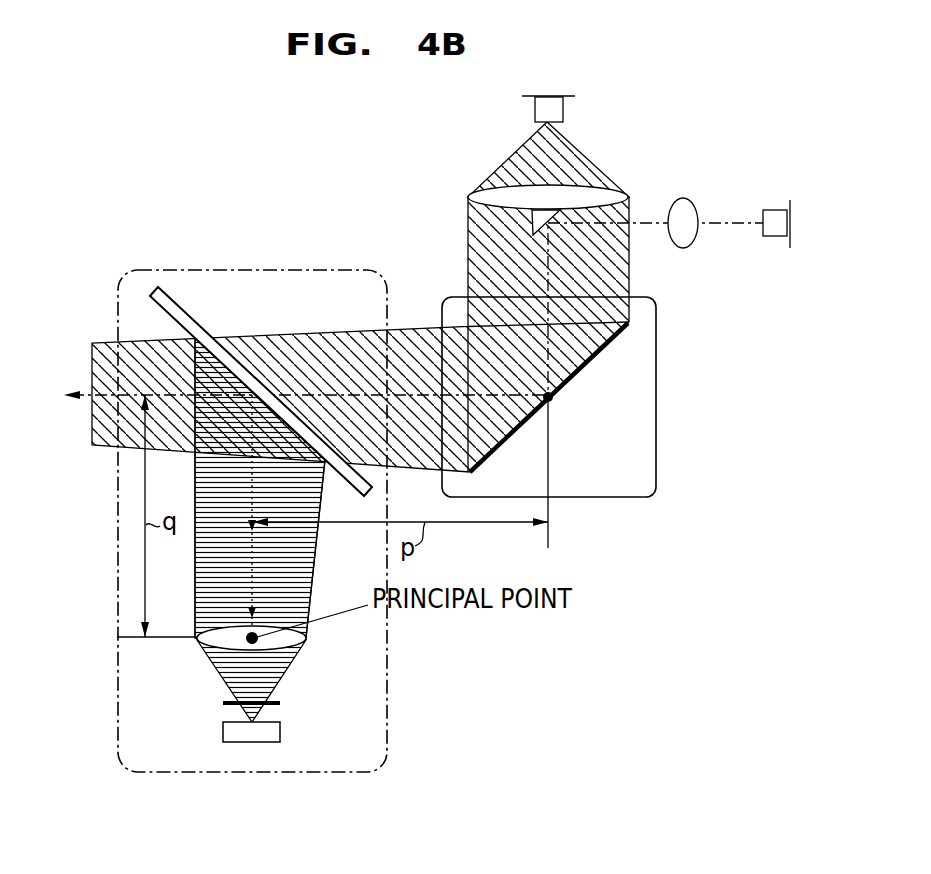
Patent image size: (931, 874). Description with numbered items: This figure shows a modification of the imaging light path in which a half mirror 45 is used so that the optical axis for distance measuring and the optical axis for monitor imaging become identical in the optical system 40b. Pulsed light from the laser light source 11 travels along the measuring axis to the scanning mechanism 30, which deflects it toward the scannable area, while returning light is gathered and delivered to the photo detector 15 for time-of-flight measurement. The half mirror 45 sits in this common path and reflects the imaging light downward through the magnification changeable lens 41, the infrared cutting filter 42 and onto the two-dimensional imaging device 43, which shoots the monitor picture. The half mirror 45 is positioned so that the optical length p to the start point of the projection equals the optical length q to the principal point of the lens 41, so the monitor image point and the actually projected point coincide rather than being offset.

The photo detector 15 is at (564, 113).
The laser light source 11 is at (776, 210).
The scanning mechanism 30 is at (656, 397).
The optical system 40b is at (225, 270).
The half mirror 45 is at (198, 325).
The magnification changeable lens 41 is at (306, 641).
The infrared cutting filter 42 is at (283, 704).
The two-dimensional imaging device 43 is at (280, 733).